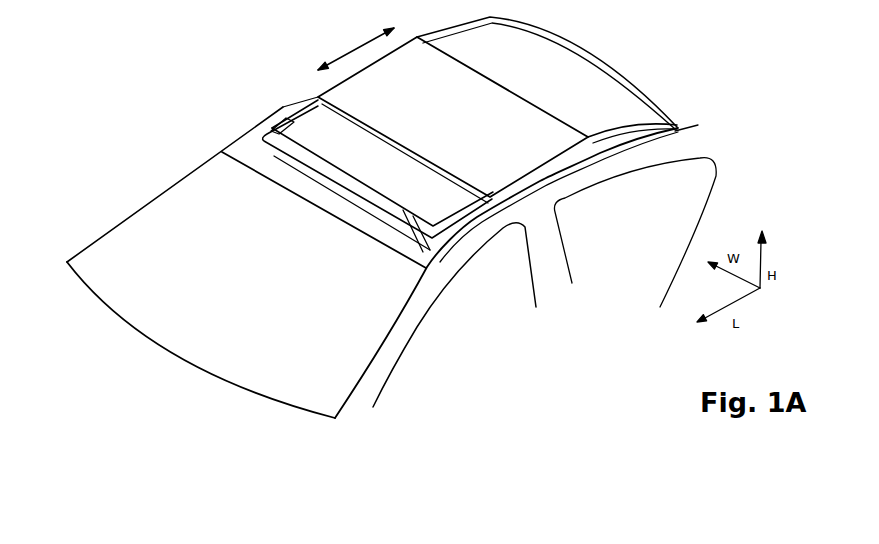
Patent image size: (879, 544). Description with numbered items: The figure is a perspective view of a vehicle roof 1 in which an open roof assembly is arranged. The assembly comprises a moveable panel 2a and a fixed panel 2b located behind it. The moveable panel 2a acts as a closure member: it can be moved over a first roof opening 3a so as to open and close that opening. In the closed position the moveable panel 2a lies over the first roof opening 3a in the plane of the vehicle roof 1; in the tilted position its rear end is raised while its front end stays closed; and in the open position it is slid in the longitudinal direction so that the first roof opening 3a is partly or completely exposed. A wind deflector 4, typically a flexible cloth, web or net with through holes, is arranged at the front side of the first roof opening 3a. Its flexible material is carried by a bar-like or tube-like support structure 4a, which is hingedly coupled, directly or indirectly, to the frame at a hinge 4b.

The vehicle roof 1 is at (665, 153).
The moveable panel 2a is at (453, 115).
The fixed panel 2b is at (547, 73).
The first roof opening 3a is at (324, 139).
The wind deflector 4 is at (271, 156).
The support structure 4a is at (398, 200).
The hinge 4b is at (276, 107).